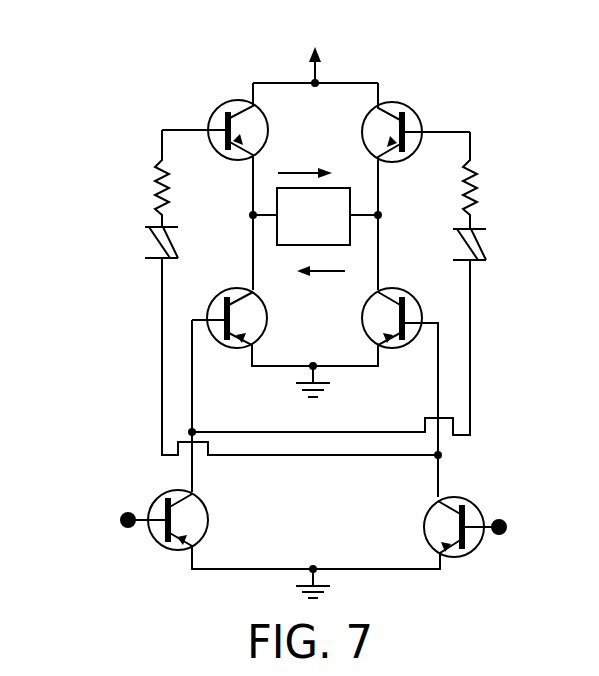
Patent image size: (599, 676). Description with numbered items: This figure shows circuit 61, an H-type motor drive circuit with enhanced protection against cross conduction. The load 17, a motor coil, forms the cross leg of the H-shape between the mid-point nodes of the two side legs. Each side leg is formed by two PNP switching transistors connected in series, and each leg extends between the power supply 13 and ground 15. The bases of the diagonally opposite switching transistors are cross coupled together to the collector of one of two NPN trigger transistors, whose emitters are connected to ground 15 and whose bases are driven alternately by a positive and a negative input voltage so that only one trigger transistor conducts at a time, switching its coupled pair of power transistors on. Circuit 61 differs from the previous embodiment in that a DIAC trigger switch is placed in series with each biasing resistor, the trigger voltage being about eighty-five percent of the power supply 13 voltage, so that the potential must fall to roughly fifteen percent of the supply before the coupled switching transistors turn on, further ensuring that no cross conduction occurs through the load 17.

The power supply 13 is at (325, 40).
The ground 15 is at (322, 590).
The load 17 is at (348, 188).
The circuit 61 is at (138, 345).